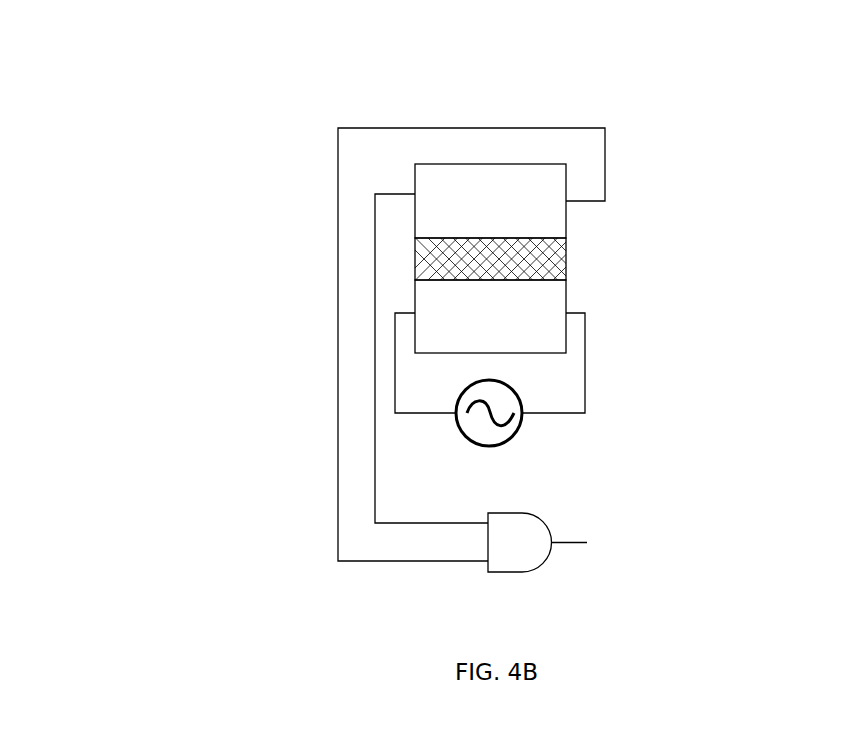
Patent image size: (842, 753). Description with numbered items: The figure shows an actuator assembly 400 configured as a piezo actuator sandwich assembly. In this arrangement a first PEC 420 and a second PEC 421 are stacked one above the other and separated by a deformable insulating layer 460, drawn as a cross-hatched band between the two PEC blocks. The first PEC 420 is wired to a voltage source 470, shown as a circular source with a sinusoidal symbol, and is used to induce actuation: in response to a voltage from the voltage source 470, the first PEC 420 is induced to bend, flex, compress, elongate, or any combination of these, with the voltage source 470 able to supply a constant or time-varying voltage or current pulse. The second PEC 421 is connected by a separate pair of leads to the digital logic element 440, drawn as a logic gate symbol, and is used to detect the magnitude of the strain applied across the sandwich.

The actuator assembly 400 is at (77, 57).
The second PEC 421 is at (534, 164).
The deformable insulating layer 460 is at (567, 257).
The first PEC 420 is at (566, 345).
The voltage source 470 is at (519, 431).
The digital logic element 440 is at (615, 575).